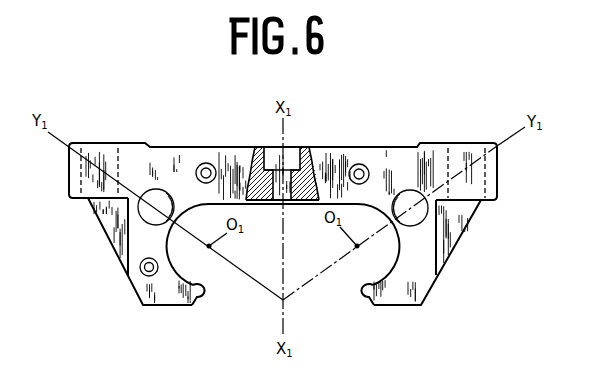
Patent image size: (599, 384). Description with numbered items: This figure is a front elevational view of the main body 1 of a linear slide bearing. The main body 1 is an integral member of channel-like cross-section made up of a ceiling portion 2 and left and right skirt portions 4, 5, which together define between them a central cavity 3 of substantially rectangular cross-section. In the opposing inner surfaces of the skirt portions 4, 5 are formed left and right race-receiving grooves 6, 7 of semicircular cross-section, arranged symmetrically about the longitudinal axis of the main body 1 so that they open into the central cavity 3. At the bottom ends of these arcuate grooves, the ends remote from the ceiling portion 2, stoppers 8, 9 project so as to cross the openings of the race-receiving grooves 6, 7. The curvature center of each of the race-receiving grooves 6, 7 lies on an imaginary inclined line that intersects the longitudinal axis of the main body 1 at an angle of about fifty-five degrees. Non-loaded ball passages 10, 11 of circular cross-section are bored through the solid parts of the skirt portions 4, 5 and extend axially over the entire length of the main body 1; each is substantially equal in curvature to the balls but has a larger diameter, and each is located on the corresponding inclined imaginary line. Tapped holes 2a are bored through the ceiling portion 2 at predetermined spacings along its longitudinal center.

The main body 1 is at (450, 138).
The ceiling portion 2 is at (356, 160).
The tapped holes 2a is at (298, 150).
The central cavity 3 is at (307, 238).
The left skirt portion 4 is at (135, 249).
The right skirt portion 5 is at (428, 252).
The left race-receiving groove 6 is at (171, 257).
The right race-receiving groove 7 is at (395, 262).
The stopper 8 is at (204, 289).
The stopper 9 is at (361, 292).
The non-loaded ball passage 10 is at (159, 195).
The non-loaded ball passage 11 is at (402, 190).